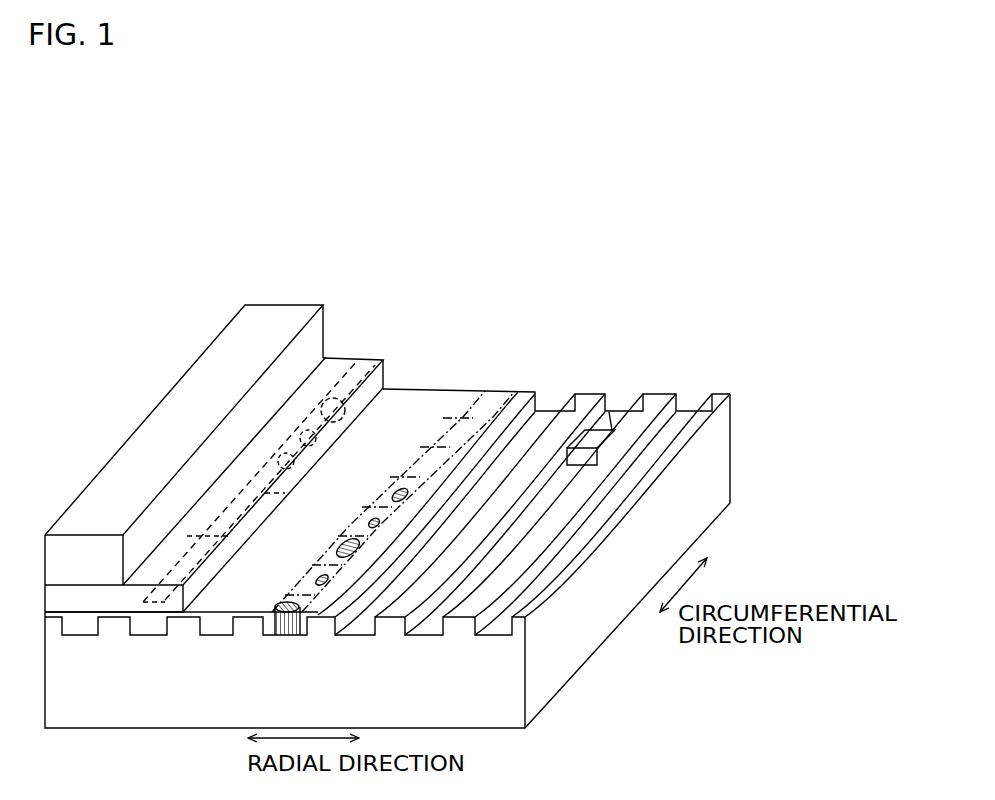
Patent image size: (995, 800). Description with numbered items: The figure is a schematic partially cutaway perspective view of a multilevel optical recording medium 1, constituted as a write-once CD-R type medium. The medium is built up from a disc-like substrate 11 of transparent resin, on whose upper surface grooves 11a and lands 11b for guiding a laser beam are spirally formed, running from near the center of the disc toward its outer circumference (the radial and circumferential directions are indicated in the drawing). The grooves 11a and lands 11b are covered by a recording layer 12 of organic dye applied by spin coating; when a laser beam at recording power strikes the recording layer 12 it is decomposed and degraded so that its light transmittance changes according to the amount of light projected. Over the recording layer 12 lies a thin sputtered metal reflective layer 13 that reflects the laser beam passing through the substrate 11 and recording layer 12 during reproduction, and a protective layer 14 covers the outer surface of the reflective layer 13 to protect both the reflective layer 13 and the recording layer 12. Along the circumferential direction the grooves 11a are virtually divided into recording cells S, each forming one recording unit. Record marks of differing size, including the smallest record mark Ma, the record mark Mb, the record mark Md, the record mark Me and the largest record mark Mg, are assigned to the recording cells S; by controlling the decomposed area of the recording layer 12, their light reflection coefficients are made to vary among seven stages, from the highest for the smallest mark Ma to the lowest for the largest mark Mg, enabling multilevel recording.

The multilevel optical recording medium 1 is at (425, 236).
The substrate 11 is at (612, 607).
The grooves 11a is at (551, 402).
The lands 11b is at (668, 405).
The recording layer 12 is at (208, 628).
The reflective layer 13 is at (386, 373).
The protective layer 14 is at (323, 328).
The virtual recording cell S is at (505, 388).
The record mark Ma is at (322, 576).
The record mark Mb is at (374, 519).
The record mark Md is at (400, 490).
The record mark Me is at (288, 603).
The record mark Mg is at (346, 541).